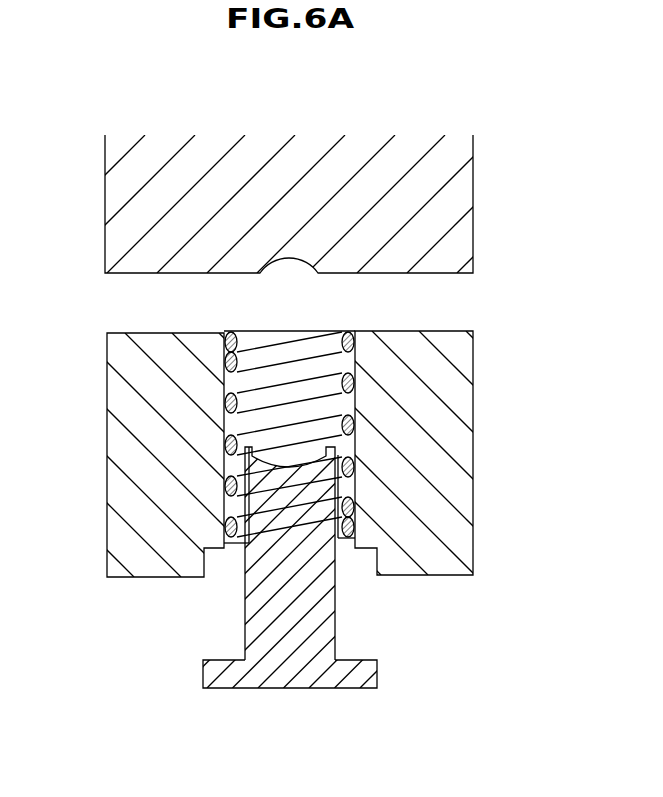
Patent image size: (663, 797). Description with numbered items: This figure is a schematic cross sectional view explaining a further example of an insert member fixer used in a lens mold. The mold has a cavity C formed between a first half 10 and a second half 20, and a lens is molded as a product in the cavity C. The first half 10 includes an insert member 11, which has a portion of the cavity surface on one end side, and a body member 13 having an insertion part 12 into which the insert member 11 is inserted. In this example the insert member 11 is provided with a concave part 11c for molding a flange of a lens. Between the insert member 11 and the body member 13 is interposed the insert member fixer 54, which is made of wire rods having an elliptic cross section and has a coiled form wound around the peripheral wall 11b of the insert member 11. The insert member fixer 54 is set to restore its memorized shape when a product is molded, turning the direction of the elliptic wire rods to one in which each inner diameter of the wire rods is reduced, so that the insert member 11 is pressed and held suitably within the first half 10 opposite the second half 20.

The second half 20 is at (473, 200).
The cavity C is at (290, 257).
The body member 13 is at (115, 385).
The first half 10 is at (473, 392).
The insert member fixer 54 is at (323, 393).
The insertion part 12 is at (224, 430).
The concave part 11c is at (224, 472).
The insert member 11 is at (305, 677).
The peripheral wall 11b is at (243, 588).